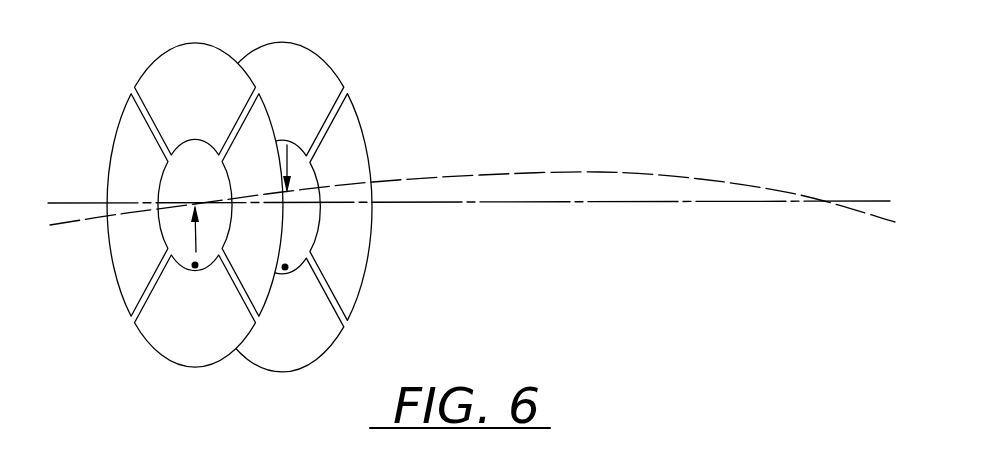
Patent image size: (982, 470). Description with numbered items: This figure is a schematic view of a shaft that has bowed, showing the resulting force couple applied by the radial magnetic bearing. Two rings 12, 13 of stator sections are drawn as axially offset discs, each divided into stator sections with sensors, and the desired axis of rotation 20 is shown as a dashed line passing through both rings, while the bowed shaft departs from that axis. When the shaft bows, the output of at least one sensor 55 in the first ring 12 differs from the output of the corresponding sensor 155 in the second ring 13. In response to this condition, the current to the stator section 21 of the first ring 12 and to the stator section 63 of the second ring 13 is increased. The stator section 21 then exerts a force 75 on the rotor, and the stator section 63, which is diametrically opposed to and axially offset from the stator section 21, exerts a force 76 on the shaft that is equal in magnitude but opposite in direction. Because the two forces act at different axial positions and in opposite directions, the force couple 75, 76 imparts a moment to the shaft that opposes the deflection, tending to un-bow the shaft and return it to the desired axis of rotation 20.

The first ring 12 is at (166, 238).
The second ring 13 is at (316, 236).
The axis of rotation 20 is at (91, 200).
The stator section 21 is at (160, 338).
The stator section 63 is at (329, 91).
The force 75 is at (194, 226).
The force 76 is at (289, 166).
The sensor 55 is at (195, 266).
The sensor 155 is at (285, 268).